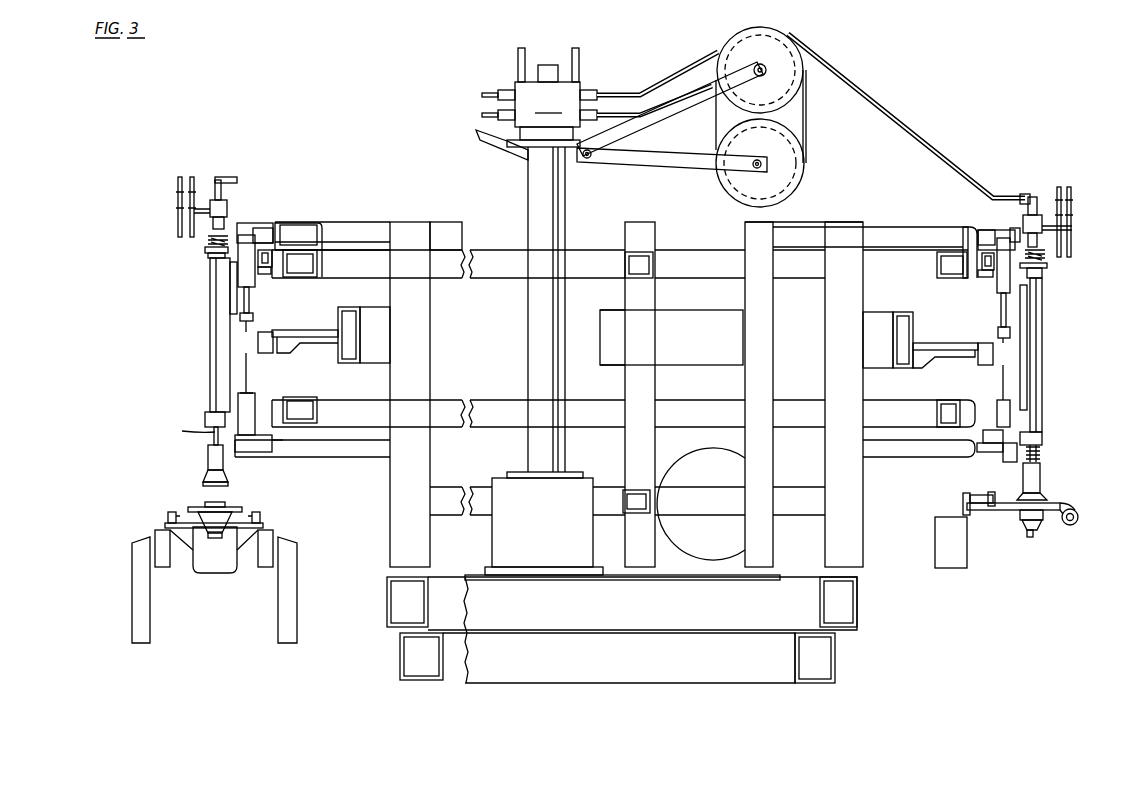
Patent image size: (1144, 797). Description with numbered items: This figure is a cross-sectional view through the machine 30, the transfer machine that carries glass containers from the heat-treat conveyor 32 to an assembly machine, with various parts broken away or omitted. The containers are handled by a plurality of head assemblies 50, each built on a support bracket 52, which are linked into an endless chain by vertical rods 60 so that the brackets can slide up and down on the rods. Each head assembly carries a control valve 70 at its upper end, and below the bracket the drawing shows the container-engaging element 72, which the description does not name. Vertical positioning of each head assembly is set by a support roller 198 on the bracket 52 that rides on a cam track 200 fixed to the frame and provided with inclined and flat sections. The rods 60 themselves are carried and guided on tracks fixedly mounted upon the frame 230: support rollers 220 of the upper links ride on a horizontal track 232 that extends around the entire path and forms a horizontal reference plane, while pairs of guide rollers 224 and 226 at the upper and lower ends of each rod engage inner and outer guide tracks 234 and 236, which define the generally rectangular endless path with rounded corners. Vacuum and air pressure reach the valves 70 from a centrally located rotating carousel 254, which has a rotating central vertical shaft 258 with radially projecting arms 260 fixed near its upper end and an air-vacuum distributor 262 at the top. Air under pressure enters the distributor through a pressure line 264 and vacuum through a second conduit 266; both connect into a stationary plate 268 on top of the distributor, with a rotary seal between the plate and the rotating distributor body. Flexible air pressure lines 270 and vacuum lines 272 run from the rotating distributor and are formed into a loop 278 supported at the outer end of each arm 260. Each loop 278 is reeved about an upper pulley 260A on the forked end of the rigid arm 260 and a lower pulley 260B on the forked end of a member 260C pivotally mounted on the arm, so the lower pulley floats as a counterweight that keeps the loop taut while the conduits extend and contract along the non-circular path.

The machine 30 is at (660, 697).
The heat-treat conveyor 32 is at (1000, 540).
The head assembly 50 is at (625, 344).
The support bracket 52 is at (214, 348).
The vertical rod 60 is at (256, 304).
The control valve 70 is at (230, 200).
The filling nozzle 72 is at (198, 470).
The support roller 198 is at (268, 346).
The track 200 is at (272, 356).
The support roller 220 is at (258, 258).
The guide rollers 224 is at (258, 228).
The guide rollers 226 is at (182, 433).
The frame 230 is at (353, 207).
The track 232 is at (270, 274).
The inner guide track 234 is at (303, 244).
The outer guide track 236 is at (1047, 248).
The rotating carousel 254 is at (580, 81).
The central vertical shaft 258 is at (565, 223).
The arm 260 is at (610, 125).
The upper pulley 260A is at (775, 43).
The lower pulley 260B is at (777, 180).
The member 260C is at (648, 160).
The air-vacuum distributor 262 is at (547, 104).
The pressure line 264 is at (517, 54).
The second conduit 266 is at (580, 57).
The stationary plate 268 is at (513, 86).
The flexible air pressure lines 270 is at (606, 93).
The vacuum lines 272 is at (668, 90).
The loop 278 is at (808, 138).